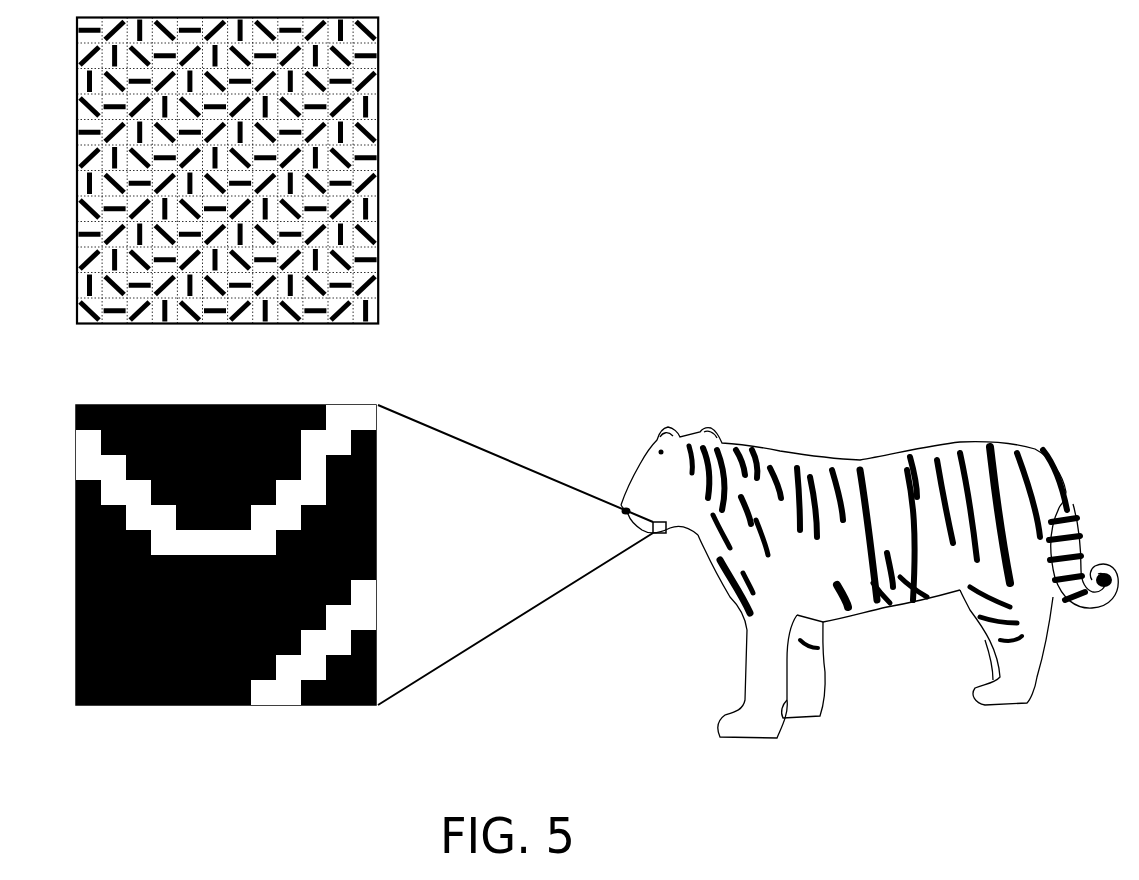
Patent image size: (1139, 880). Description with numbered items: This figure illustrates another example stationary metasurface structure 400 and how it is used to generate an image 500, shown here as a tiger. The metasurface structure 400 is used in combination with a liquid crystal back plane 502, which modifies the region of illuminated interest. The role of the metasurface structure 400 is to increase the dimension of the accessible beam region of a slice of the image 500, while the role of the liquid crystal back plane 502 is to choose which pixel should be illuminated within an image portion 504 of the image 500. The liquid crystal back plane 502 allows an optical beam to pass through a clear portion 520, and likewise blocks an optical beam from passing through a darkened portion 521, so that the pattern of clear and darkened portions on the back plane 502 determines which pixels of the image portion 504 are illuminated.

The metasurface structure 400 is at (378, 304).
The image 500 is at (712, 608).
The liquid crystal back plane 502 is at (307, 521).
The image portion 504 is at (655, 536).
The clear portion 520 is at (356, 410).
The darkened portion 521 is at (247, 405).